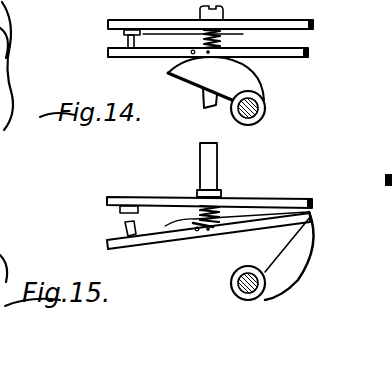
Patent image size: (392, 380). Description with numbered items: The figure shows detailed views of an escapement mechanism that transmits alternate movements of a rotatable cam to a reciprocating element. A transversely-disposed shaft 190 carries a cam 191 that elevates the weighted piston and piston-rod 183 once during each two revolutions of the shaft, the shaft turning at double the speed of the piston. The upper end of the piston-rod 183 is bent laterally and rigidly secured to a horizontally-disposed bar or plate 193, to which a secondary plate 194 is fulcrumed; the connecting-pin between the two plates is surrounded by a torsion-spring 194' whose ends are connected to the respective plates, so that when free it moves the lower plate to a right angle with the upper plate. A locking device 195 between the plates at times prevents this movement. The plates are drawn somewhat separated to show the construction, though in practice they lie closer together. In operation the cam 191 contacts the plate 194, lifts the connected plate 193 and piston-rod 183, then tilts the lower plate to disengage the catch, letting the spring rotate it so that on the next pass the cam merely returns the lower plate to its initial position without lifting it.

In FIG. 14, the piston-rod 183 is at (200, 9).
In FIG. 15, the piston-rod 183 is at (200, 157).
In FIG. 14, the shaft 190 is at (256, 111).
In FIG. 15, the shaft 190 is at (238, 284).
In FIG. 14, the cam 191 is at (245, 83).
In FIG. 15, the cam 191 is at (282, 274).
In FIG. 14, the bar or plate 193 is at (312, 24).
In FIG. 15, the bar or plate 193 is at (136, 198).
In FIG. 14, the secondary plate 194 is at (233, 57).
In FIG. 15, the secondary plate 194 is at (208, 237).
In FIG. 15, the torsion-spring 194' is at (226, 242).
In FIG. 14, the locking device 195 is at (128, 47).
In FIG. 15, the locking device 195 is at (118, 209).